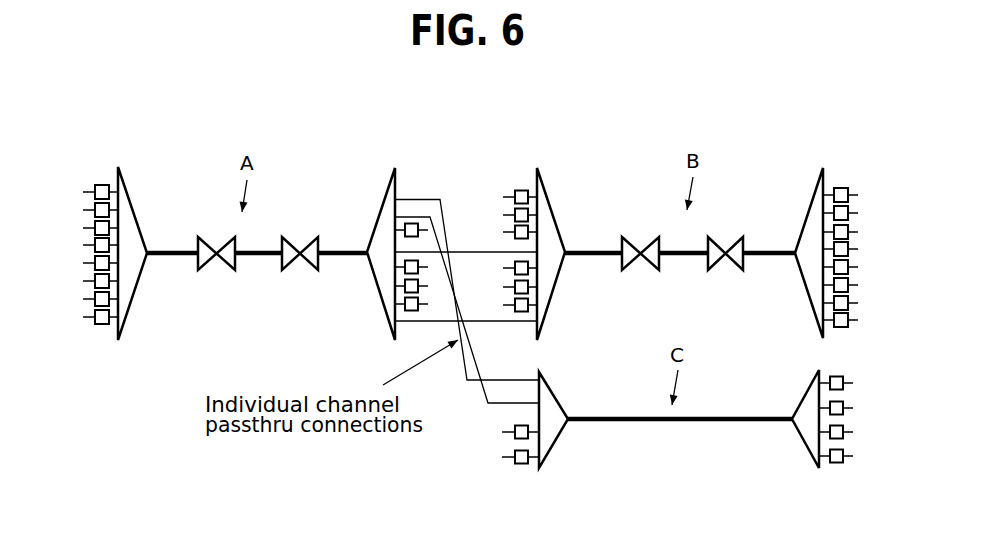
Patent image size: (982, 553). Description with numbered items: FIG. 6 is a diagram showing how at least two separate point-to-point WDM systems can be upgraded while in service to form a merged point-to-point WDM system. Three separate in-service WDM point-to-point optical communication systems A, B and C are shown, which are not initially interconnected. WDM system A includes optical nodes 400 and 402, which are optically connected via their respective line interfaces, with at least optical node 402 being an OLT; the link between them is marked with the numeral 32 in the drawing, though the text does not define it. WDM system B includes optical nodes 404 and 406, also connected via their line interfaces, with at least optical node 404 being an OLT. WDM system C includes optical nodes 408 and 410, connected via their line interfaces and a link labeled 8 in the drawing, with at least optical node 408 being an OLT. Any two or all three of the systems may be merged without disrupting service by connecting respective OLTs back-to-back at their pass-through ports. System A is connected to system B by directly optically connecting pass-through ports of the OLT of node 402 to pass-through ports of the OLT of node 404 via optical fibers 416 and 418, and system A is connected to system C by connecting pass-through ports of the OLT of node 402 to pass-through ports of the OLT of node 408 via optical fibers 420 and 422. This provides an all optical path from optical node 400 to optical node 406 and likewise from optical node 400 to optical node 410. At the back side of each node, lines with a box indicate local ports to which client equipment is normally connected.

The optical node 400 is at (122, 164).
The fiber optic link with isolators 32 is at (183, 276).
The optical node 402 is at (380, 222).
The optical node 404 is at (547, 218).
The optical node 406 is at (813, 187).
The optical node 408 is at (553, 450).
The optical node 410 is at (818, 470).
The optical fiber 416 is at (473, 250).
The optical fiber 418 is at (485, 303).
The optical fiber 420 is at (422, 198).
The optical fiber 422 is at (478, 390).
The fiber optic link 8 is at (607, 438).